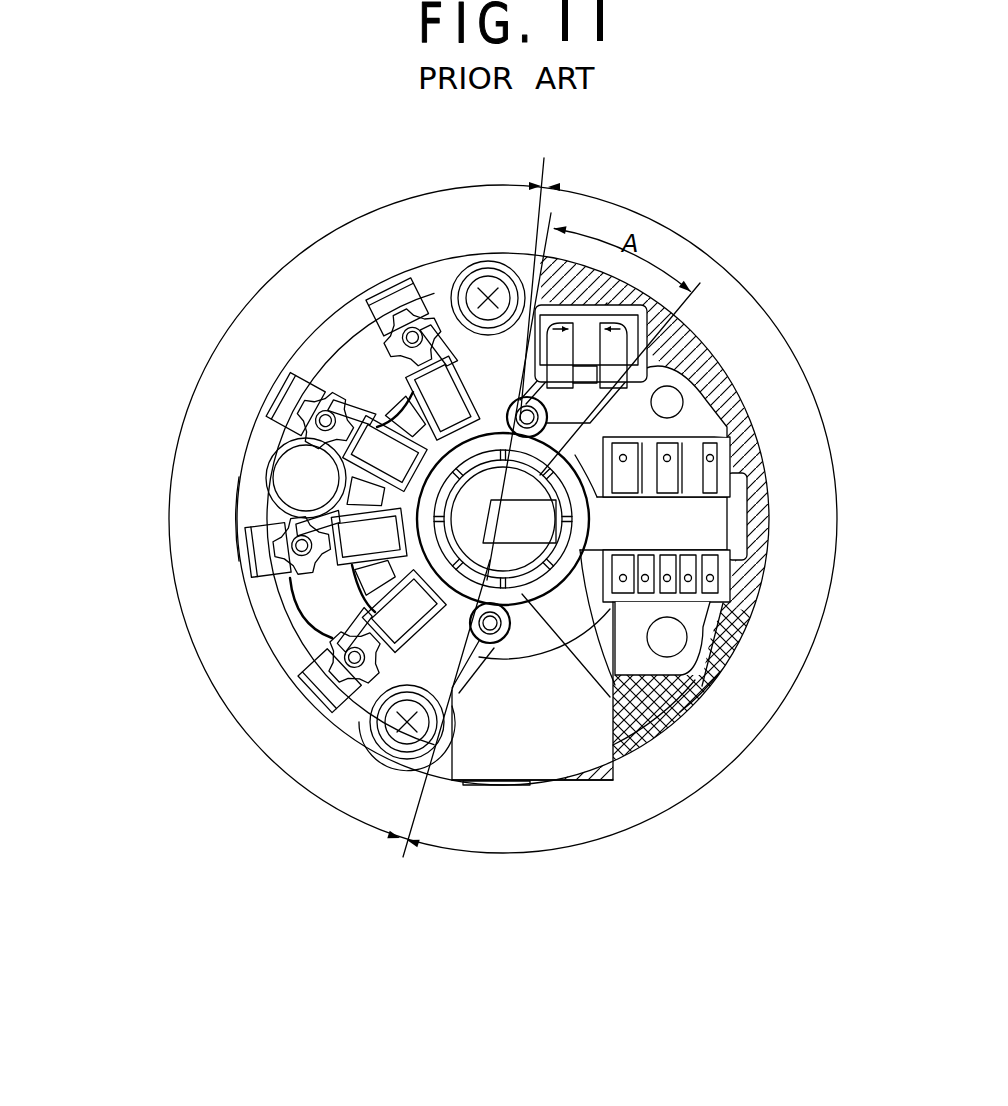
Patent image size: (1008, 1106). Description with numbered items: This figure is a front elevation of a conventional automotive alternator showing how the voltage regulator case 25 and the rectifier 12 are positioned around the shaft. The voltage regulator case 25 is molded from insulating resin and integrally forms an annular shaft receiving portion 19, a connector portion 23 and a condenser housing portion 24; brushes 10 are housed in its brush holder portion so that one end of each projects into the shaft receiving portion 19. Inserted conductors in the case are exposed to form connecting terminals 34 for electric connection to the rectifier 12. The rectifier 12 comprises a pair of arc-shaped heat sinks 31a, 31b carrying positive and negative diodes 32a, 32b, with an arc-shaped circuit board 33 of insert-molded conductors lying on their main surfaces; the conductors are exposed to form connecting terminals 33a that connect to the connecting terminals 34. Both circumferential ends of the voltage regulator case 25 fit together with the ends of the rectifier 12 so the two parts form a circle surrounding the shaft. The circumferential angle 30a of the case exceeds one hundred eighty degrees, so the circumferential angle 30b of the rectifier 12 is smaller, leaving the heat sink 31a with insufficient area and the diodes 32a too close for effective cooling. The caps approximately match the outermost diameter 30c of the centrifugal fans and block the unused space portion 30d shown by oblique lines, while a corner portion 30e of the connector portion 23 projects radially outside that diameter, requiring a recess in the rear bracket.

The brushes 10 is at (637, 735).
The rectifier 12 is at (235, 516).
The shaft receiving portion 19 is at (647, 717).
The connector portion 23 is at (523, 727).
The condenser housing portion 24 is at (613, 307).
The voltage regulator case 25 is at (697, 375).
The circumferential angle of the voltage regulator case 30a is at (521, 519).
The circumferential angle of the rectifier 30b is at (457, 519).
The outermost diameter of the centrifugal fans 30c is at (724, 678).
The unused space portion 30d is at (683, 690).
The corner portion 30e is at (597, 790).
The heat sink 31a is at (337, 340).
The heat sink 31b is at (400, 420).
The positive diodes 32a is at (367, 540).
The negative diodes 32b is at (260, 558).
The circuit board 33 is at (350, 393).
The connecting terminals 33a is at (497, 643).
The connecting terminals 34 is at (496, 799).